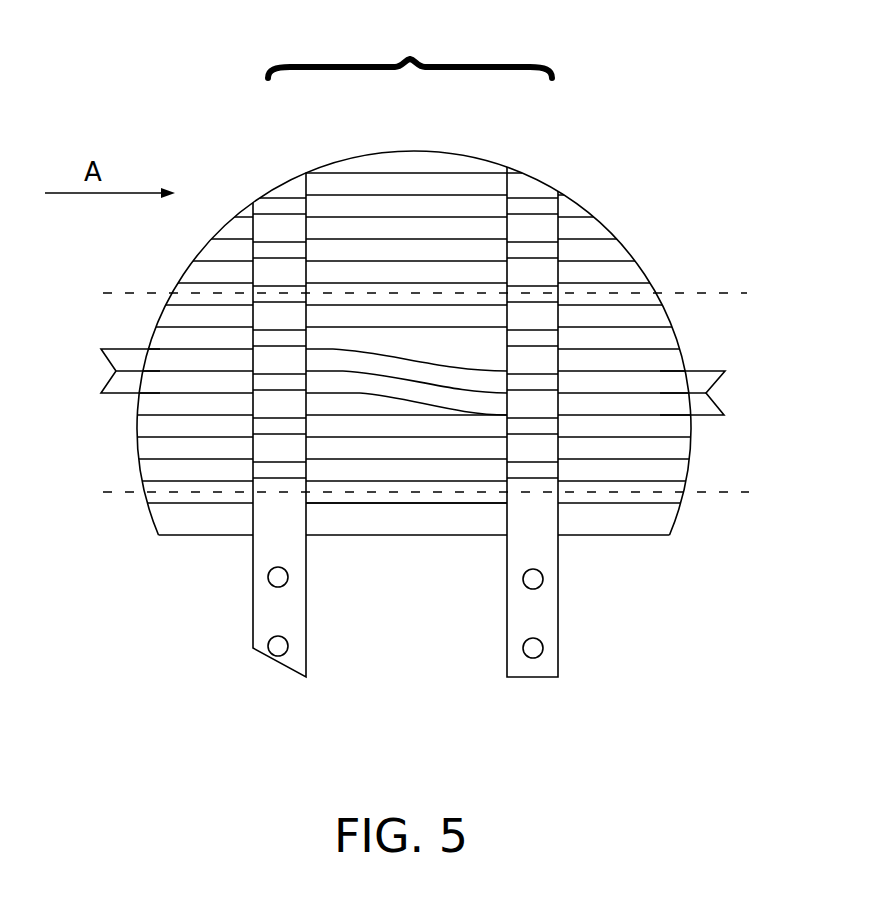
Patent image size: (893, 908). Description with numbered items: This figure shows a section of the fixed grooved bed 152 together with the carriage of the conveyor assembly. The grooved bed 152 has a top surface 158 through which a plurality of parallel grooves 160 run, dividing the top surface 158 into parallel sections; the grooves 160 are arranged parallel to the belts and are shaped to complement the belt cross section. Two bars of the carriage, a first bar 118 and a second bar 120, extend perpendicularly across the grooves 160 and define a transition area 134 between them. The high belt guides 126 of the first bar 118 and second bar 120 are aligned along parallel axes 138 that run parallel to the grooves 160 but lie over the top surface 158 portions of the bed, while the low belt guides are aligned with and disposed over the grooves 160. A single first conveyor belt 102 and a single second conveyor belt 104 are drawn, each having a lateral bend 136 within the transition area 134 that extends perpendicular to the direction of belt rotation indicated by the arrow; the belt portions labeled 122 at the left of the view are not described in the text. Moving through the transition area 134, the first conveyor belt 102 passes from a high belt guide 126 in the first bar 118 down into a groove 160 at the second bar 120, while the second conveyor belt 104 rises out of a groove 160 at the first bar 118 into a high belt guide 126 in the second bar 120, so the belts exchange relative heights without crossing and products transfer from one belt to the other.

The first conveyor belt 102 is at (702, 407).
The second conveyor belt 104 is at (715, 367).
The first bar 118 is at (265, 555).
The second bar 120 is at (547, 663).
The notched end 122 is at (188, 360).
The high belt guide 126 is at (280, 283).
The transition area 134 is at (410, 49).
The lateral bend 136 is at (418, 362).
The parallel axes 138 is at (698, 292).
The grooved bed 152 is at (635, 544).
The top surface 158 is at (362, 520).
The parallel grooves 160 is at (663, 362).